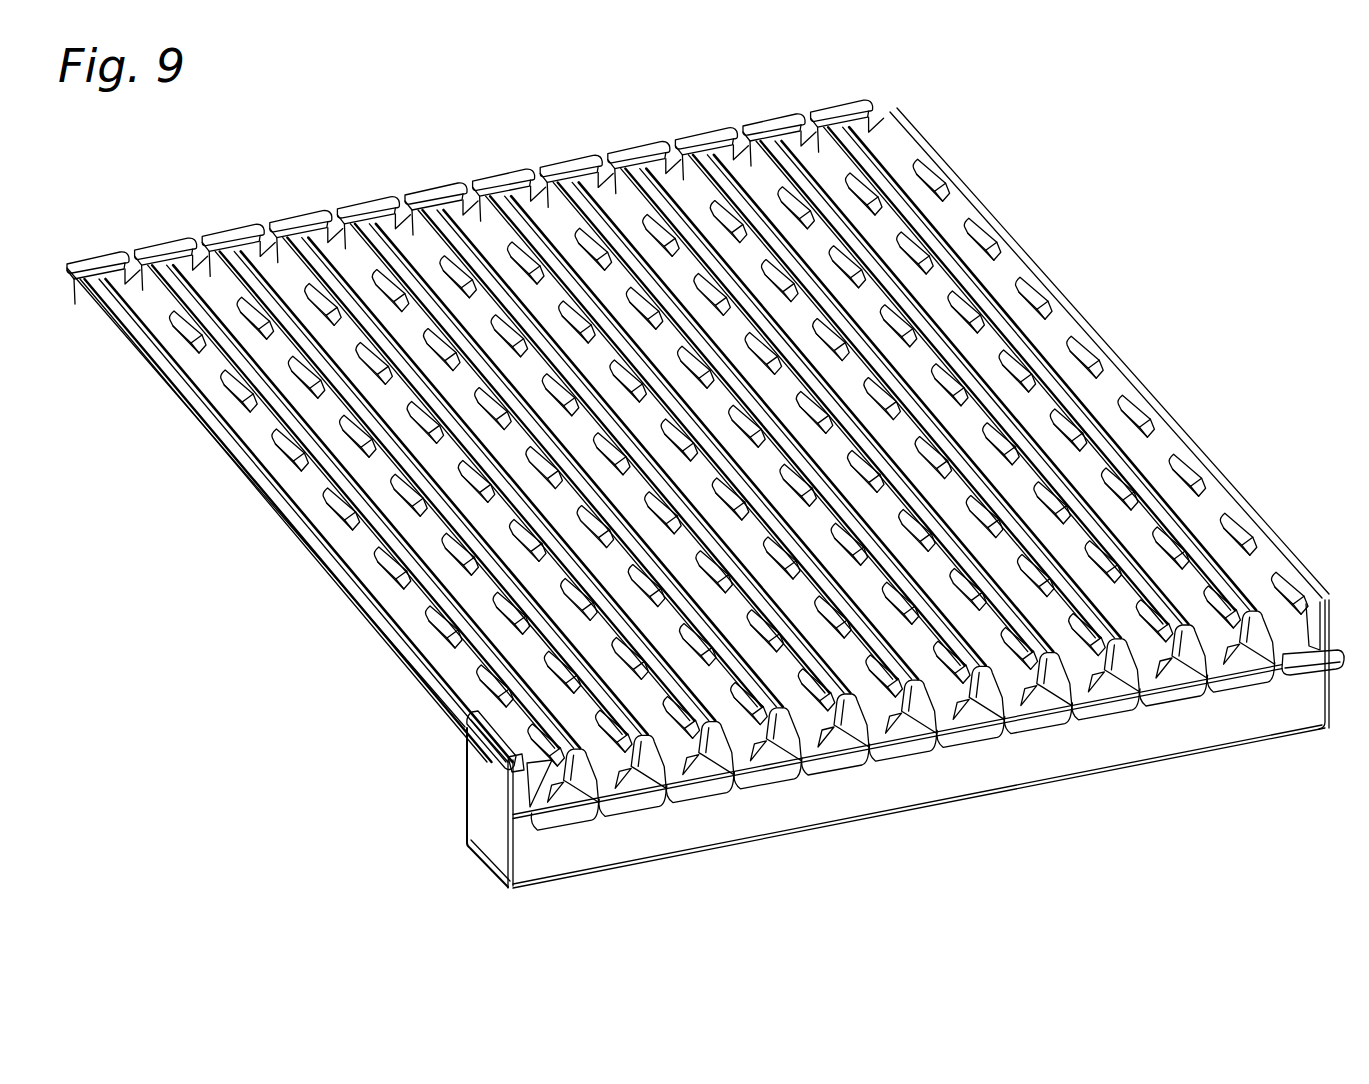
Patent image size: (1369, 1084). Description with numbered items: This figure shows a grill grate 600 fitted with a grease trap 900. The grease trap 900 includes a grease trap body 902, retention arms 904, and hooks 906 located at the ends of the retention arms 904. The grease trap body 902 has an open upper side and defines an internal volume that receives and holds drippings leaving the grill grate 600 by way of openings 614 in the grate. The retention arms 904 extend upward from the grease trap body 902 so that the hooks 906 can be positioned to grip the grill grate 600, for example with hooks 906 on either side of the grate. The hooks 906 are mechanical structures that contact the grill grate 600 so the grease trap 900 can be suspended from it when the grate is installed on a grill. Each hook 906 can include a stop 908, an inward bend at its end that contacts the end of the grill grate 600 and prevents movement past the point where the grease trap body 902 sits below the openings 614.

The grill grate 600 is at (415, 148).
The openings 614 is at (820, 742).
The grease trap 900 is at (705, 536).
The grease trap body 902 is at (1170, 727).
The retention arms 904 is at (488, 800).
The hooks 906 is at (467, 725).
The stop 908 is at (557, 768).